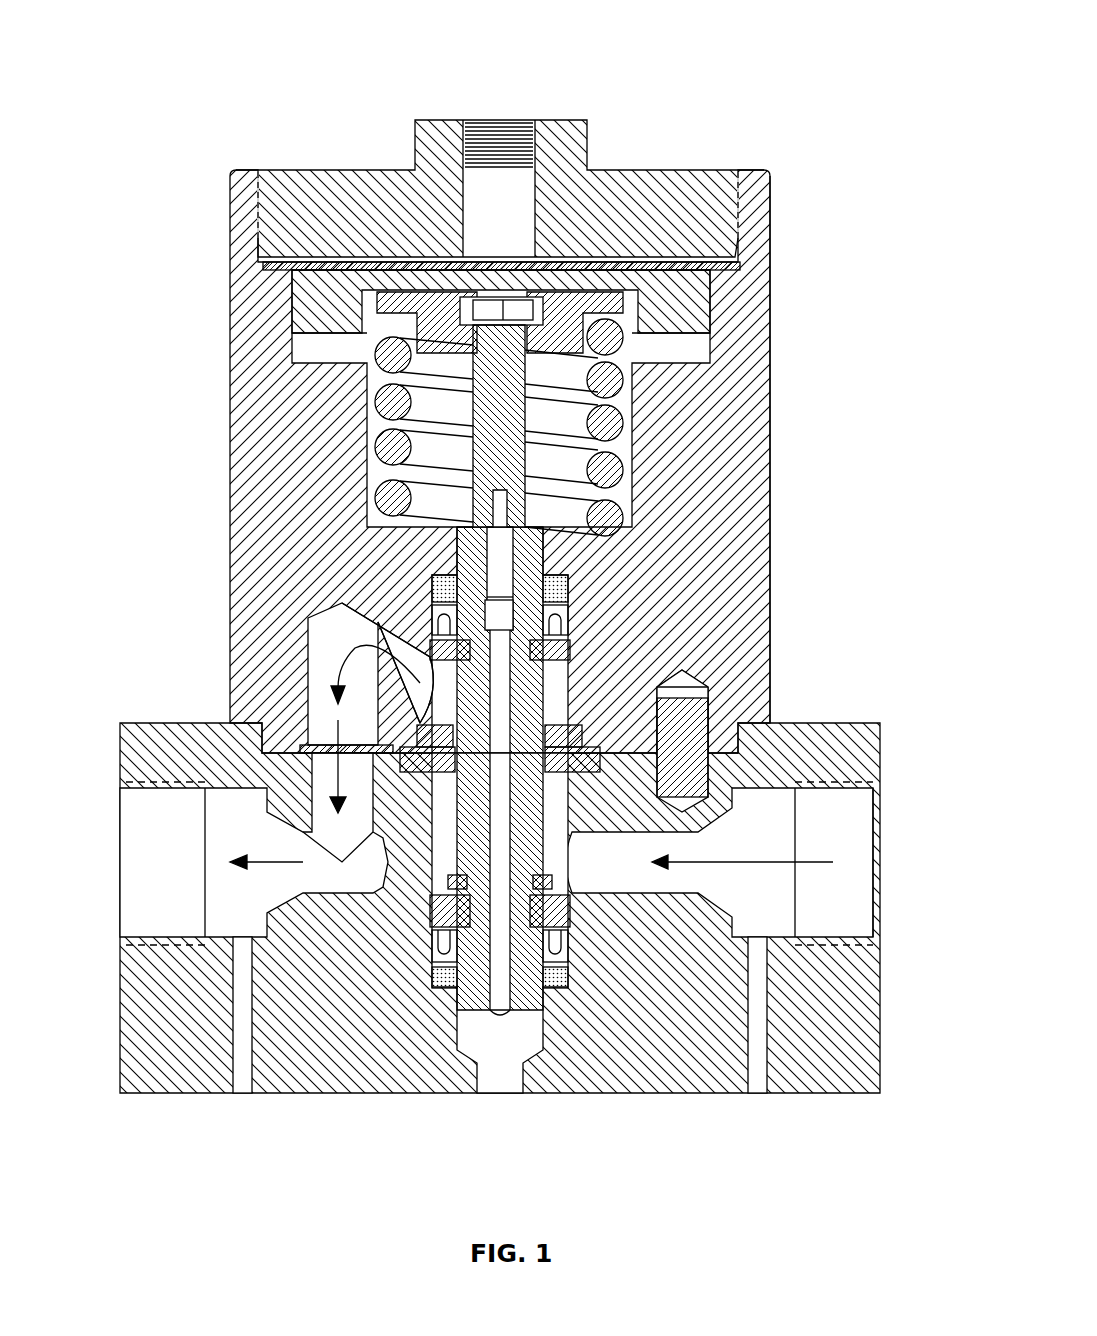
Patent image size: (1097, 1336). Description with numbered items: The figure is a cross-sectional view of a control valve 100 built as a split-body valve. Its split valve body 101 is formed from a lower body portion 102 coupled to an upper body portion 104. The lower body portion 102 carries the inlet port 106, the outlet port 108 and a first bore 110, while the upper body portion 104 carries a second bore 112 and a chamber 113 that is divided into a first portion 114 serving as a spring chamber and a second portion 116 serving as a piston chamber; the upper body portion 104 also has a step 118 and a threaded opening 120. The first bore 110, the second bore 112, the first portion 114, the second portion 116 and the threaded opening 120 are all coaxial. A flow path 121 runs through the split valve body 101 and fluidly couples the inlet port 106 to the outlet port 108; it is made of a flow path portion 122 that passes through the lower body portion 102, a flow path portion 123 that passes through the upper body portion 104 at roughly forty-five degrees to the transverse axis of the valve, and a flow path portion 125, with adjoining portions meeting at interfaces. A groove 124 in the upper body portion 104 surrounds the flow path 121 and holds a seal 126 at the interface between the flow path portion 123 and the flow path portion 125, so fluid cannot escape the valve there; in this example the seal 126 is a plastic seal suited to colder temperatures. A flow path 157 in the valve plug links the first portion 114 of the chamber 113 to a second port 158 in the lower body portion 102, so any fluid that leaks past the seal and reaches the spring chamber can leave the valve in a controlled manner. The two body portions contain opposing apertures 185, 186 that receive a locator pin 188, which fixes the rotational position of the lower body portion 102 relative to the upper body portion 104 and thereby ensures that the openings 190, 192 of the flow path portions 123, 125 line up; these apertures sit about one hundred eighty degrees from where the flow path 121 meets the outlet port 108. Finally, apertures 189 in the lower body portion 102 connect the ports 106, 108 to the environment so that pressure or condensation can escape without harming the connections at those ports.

The control valve 100 is at (754, 48).
The split valve body 101 is at (743, 337).
The lower body portion 102 is at (860, 1073).
The upper body portion 104 is at (750, 397).
The inlet port 106 is at (880, 937).
The outlet port 108 is at (133, 940).
The first bore 110 is at (555, 805).
The second bore 112 is at (583, 673).
The chamber 113 is at (387, 316).
The first portion of the chamber 114 is at (367, 512).
The second portion of the chamber 116 is at (297, 347).
The step 118 is at (720, 283).
The threaded opening 120 is at (257, 217).
The flow path 121 is at (430, 688).
The flow path portion 122 is at (838, 832).
The flow path portion 123 is at (332, 653).
The groove 124 is at (385, 750).
The flow path portion 125 is at (387, 752).
The seal 126 is at (213, 862).
The flow path 157 is at (502, 995).
The second port 158 is at (477, 1067).
The aperture 185 is at (838, 832).
The aperture 186 is at (708, 700).
The locator pin 188 is at (695, 728).
The apertures 189 is at (243, 1090).
The opening 190 is at (297, 742).
The opening 192 is at (399, 672).